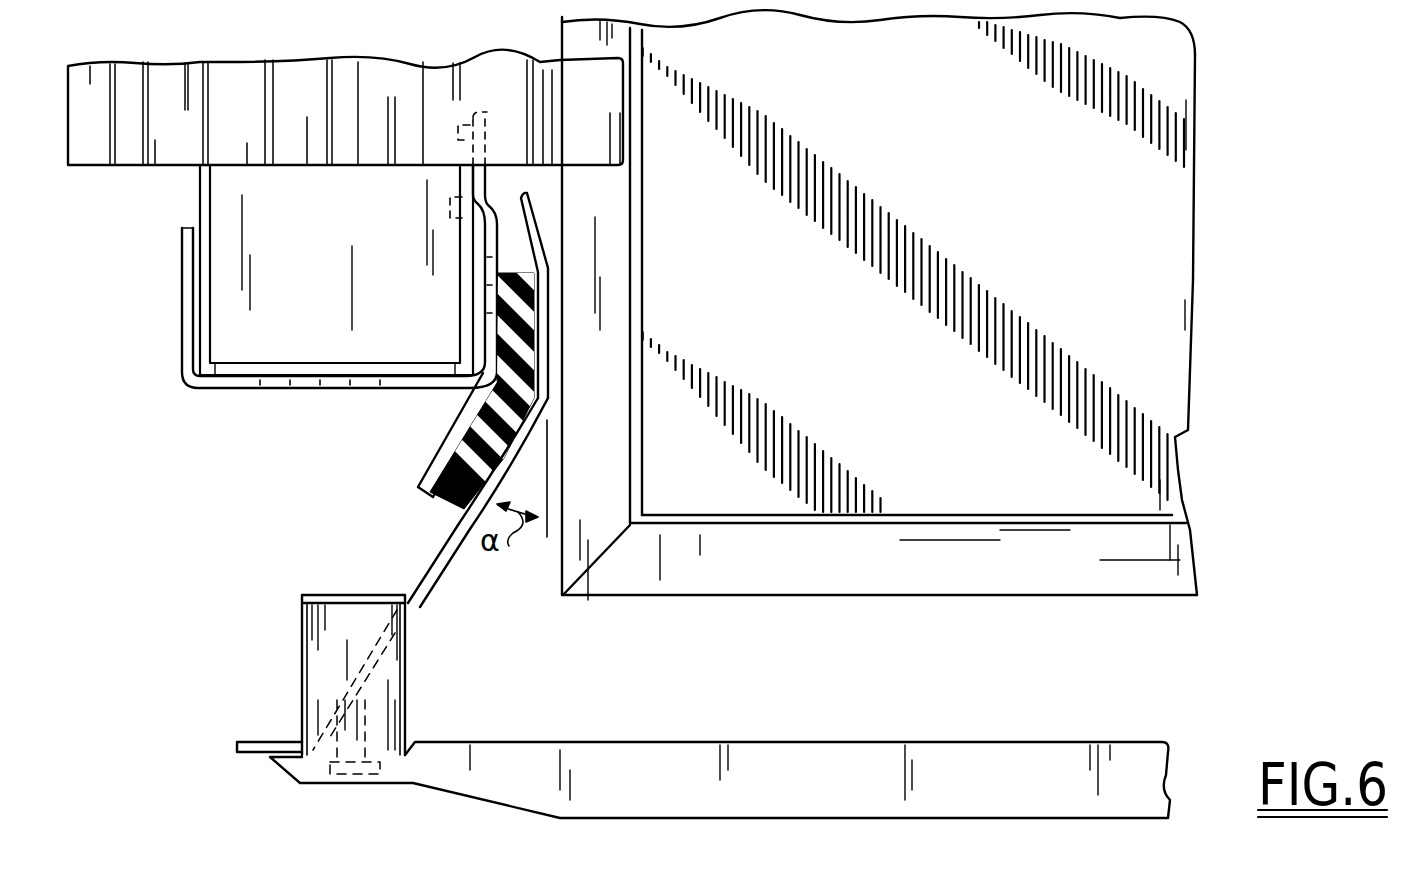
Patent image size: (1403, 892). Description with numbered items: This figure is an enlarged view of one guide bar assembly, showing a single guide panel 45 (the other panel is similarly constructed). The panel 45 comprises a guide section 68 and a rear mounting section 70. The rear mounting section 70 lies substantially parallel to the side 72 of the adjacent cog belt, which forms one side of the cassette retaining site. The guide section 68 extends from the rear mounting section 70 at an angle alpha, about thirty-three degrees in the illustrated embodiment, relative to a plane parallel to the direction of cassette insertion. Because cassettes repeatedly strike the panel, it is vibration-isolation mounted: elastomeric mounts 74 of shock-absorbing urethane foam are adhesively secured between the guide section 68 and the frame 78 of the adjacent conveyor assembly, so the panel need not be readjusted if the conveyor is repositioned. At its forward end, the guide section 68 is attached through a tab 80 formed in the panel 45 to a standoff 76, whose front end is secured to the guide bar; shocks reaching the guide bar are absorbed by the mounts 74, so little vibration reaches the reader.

The side of the adjacent cog belt 72 is at (542, 60).
The frame 78 is at (297, 388).
The elastomeric mounts 74 is at (467, 450).
The rear mounting section 70 is at (550, 377).
The guide section 68 is at (433, 553).
The guide panel 45 is at (449, 580).
The tab 80 is at (344, 600).
The standoff 76 is at (405, 690).